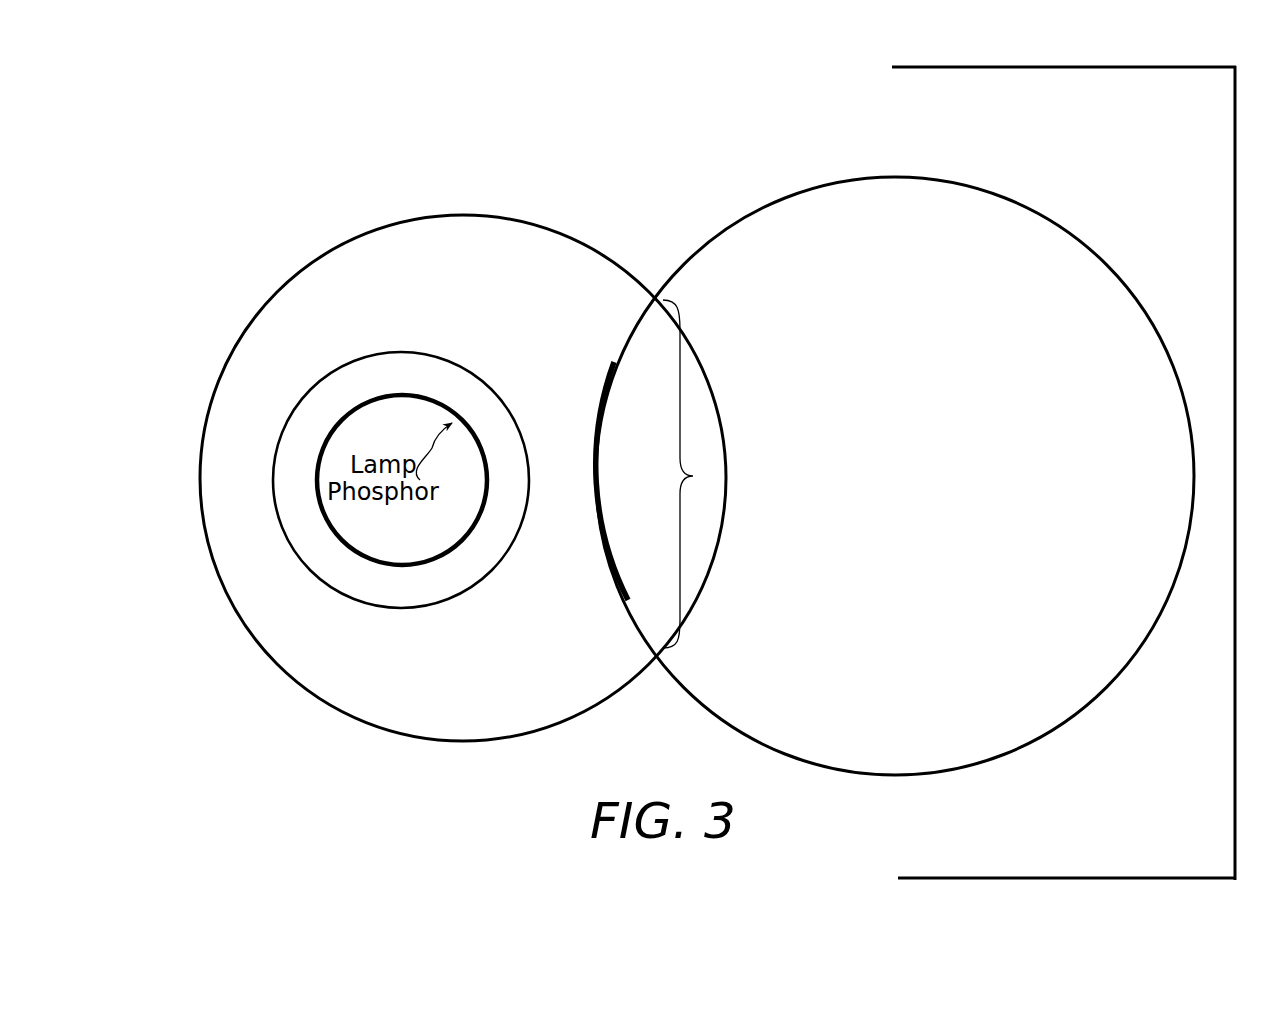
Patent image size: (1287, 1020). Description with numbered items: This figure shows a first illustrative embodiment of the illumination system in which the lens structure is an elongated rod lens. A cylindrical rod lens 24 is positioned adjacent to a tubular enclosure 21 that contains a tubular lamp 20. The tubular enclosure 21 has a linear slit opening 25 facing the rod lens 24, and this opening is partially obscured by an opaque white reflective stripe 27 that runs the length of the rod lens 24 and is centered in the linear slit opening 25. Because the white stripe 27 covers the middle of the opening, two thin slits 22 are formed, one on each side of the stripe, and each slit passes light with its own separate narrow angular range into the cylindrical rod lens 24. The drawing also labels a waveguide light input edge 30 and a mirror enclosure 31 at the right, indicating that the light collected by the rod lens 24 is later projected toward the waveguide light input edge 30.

The tubular lamp 20 is at (272, 467).
The tubular enclosure 21 is at (250, 325).
The thin slits 22 is at (630, 335).
The cylindrical rod lens 24 is at (803, 188).
The linear slit opening 25 is at (702, 474).
The white stripe 27 is at (487, 655).
The waveguide light input edge 30 is at (1235, 757).
The mirror enclosure 31 is at (1077, 122).